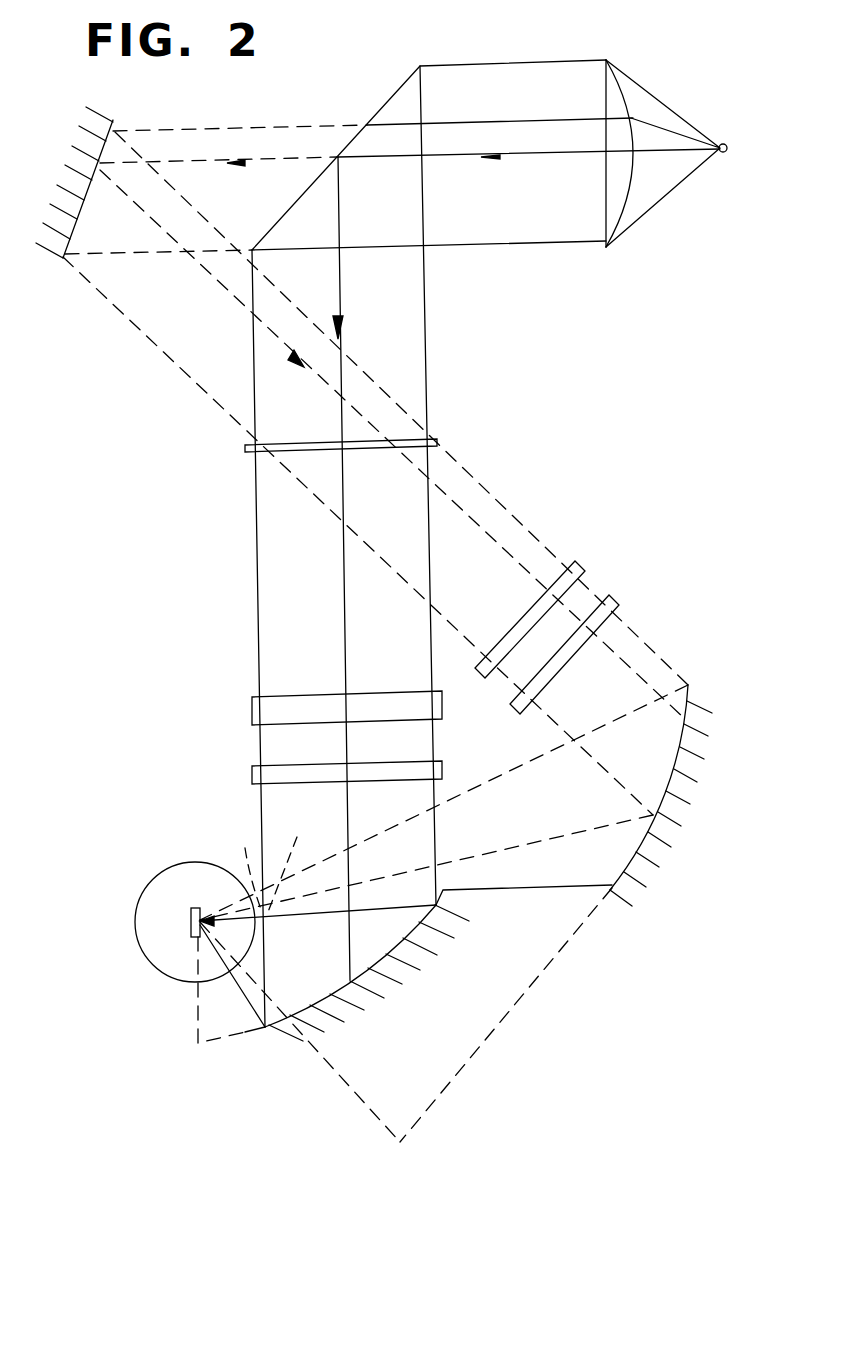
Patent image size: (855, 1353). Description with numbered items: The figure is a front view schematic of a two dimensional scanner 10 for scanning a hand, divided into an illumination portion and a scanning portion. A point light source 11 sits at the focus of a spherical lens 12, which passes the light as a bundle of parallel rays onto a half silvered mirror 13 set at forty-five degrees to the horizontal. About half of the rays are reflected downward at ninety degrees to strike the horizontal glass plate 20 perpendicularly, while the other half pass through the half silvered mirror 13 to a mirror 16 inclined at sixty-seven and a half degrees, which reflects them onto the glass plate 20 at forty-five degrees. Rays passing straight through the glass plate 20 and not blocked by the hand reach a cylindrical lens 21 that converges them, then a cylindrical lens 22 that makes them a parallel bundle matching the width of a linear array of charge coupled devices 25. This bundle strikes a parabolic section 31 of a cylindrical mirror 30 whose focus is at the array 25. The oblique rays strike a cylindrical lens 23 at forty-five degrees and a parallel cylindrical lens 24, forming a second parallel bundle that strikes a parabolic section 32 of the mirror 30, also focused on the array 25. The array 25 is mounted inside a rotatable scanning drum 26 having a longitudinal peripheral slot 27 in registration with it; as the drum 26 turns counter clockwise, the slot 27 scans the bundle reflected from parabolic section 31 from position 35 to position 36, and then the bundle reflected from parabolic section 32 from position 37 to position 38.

The two dimensional scanner 10 is at (422, 44).
The point light source 11 is at (722, 143).
The spherical lens 12 is at (606, 60).
The half silvered mirror 13 is at (392, 98).
The mirror 16 is at (115, 122).
The glass plate 20 is at (437, 440).
The cylindrical lens 21 is at (252, 705).
The cylindrical lens 22 is at (252, 775).
The cylindrical lens 23 is at (580, 563).
The cylindrical lens 24 is at (622, 600).
The linear array of charge coupled devices 25 is at (191, 921).
The rotatable scanning drum 26 is at (172, 872).
The longitudinal peripheral slot 27 is at (268, 925).
The cylindrical mirror 30 is at (547, 888).
The parabolic section 31 is at (378, 963).
The parabolic section 32 is at (665, 777).
The position 35 is at (233, 992).
The position 36 is at (272, 920).
The position 37 is at (290, 870).
The position 38 is at (239, 870).